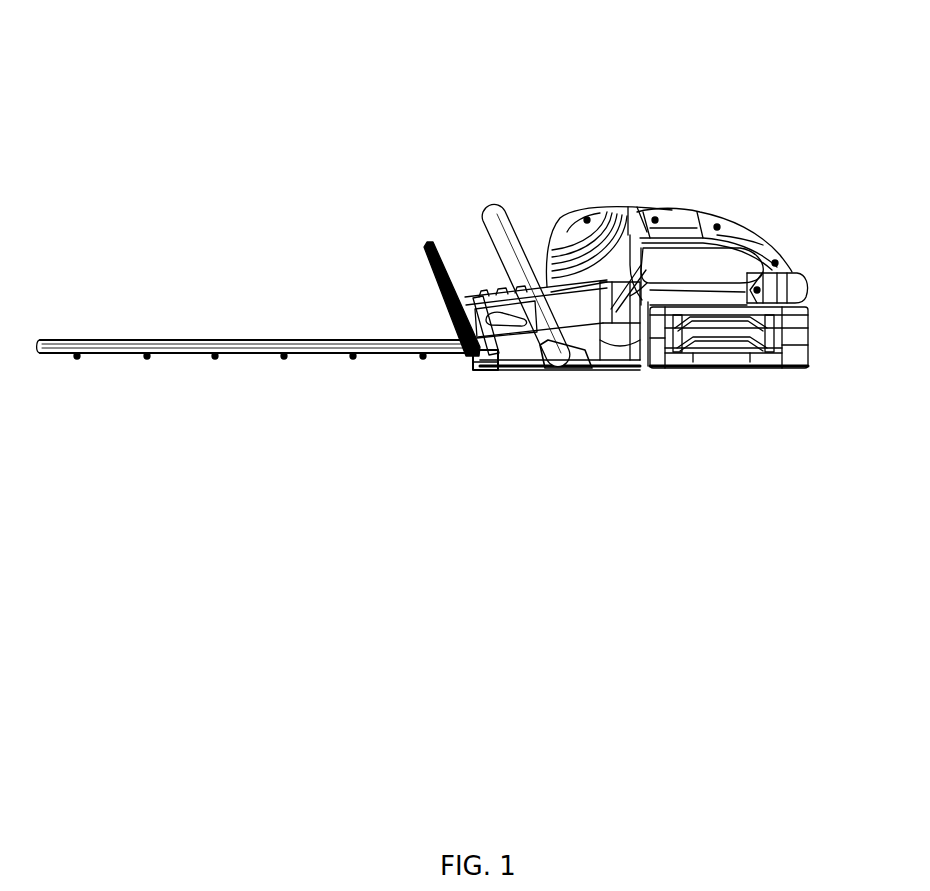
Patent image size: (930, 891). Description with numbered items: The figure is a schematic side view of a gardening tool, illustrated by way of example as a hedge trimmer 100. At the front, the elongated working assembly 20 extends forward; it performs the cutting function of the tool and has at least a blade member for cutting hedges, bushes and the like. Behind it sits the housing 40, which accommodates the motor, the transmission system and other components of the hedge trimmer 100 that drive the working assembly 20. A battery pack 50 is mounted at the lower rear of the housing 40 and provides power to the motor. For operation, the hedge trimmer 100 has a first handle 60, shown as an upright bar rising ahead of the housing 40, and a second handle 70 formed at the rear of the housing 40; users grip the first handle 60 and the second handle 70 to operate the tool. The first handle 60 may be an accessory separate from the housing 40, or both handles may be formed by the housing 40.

The hedge trimmer 100 is at (372, 115).
The working assembly 20 is at (268, 338).
The housing 40 is at (580, 232).
The battery pack 50 is at (725, 357).
The first handle 60 is at (487, 218).
The second handle 70 is at (706, 220).